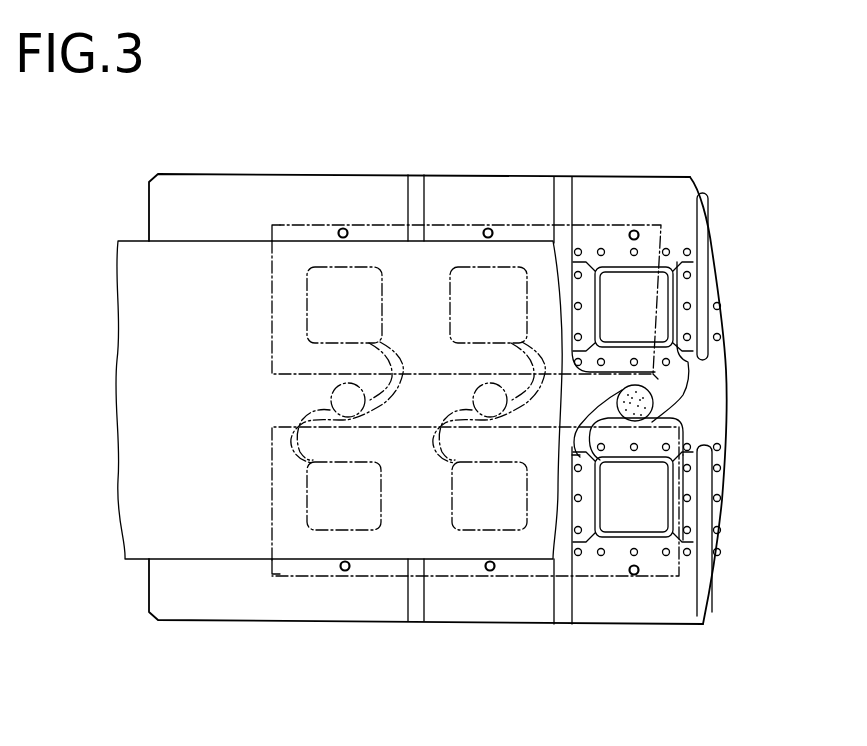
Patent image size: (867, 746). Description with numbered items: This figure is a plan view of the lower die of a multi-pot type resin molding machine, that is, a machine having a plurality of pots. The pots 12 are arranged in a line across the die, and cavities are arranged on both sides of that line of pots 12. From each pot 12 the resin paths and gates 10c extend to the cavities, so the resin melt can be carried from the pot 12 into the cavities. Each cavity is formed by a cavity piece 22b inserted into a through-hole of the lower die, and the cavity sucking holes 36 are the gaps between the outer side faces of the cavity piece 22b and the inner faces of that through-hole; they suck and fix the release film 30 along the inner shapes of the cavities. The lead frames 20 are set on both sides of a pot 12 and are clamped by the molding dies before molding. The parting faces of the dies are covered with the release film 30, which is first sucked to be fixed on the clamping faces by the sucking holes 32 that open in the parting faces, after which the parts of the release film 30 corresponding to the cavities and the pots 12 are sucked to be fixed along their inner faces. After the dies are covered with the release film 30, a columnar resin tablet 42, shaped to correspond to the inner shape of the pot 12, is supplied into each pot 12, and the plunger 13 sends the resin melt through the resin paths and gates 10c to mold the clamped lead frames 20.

The resin paths and gates 10c is at (528, 358).
The pot 12 is at (645, 400).
The plunger 13 is at (647, 421).
The lead frame 20 is at (300, 230).
The cavity piece 22b is at (662, 293).
The release film 30 is at (125, 361).
The sucking holes 32 is at (669, 251).
The cavity sucking holes 36 is at (668, 517).
The resin tablet 42 is at (337, 404).